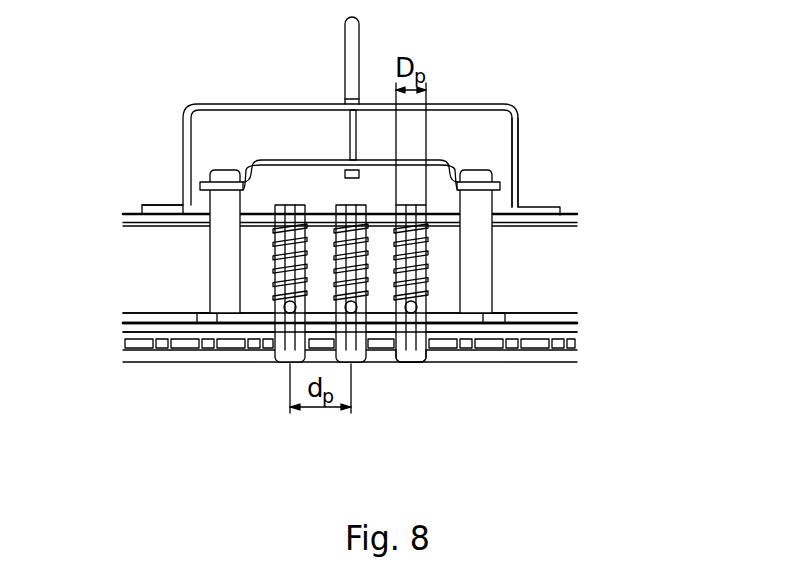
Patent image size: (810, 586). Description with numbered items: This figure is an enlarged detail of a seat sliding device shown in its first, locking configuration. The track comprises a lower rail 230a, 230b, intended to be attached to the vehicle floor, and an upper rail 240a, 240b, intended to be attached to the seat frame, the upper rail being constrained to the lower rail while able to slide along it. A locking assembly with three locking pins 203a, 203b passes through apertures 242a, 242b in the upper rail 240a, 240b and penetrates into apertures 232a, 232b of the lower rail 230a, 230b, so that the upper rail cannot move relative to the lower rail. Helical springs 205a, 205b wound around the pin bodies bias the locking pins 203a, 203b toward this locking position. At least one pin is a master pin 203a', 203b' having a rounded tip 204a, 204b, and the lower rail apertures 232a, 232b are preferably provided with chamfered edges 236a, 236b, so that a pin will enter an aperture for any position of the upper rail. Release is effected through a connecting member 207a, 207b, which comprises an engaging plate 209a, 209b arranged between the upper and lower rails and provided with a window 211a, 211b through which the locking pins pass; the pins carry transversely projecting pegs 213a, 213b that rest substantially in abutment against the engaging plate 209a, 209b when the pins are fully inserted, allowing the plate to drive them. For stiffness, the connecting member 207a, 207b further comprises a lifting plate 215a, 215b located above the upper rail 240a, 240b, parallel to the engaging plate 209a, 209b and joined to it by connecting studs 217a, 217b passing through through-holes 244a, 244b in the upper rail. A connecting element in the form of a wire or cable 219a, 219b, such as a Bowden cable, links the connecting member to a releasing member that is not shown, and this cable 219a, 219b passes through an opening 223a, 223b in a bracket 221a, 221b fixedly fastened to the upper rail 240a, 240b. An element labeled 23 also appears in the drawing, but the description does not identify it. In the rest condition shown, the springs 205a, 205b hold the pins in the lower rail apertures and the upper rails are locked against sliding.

The locking pin 203a is at (161, 237).
The locking pin 203b is at (161, 237).
The master pin 203a' is at (528, 334).
The master pin 203b' is at (528, 334).
The rounded tip 204a is at (494, 406).
The rounded tip 204b is at (413, 366).
The helical spring 205a is at (492, 262).
The helical spring 205b is at (428, 273).
The connecting member 207a is at (572, 239).
The connecting member 207b is at (614, 194).
The engaging plate 209a is at (296, 355).
The engaging plate 209b is at (197, 315).
The window 211a is at (446, 315).
The window 211b is at (428, 312).
The transversely projecting peg 213a is at (221, 292).
The transversely projecting peg 213b is at (284, 307).
The lifting plate 215a is at (370, 130).
The lifting plate 215b is at (370, 130).
The connecting stud 217a is at (446, 232).
The connecting stud 217b is at (480, 247).
The cable 219a is at (447, 58).
The cable 219b is at (359, 27).
The bracket 221a is at (612, 162).
The bracket 221b is at (519, 133).
The opening 223a is at (256, 96).
The opening 223b is at (351, 111).
The board 23 is at (561, 351).
The lower rail 230a is at (446, 411).
The lower rail 230b is at (577, 347).
The aperture 232a is at (295, 409).
The aperture 232b is at (295, 409).
The chamfered edge 236a is at (295, 409).
The chamfered edge 236b is at (280, 453).
The upper rail 240a is at (100, 181).
The upper rail 240b is at (142, 206).
The aperture 242a is at (249, 215).
The aperture 242b is at (349, 204).
The through-hole 244a is at (131, 241).
The through-hole 244b is at (223, 250).